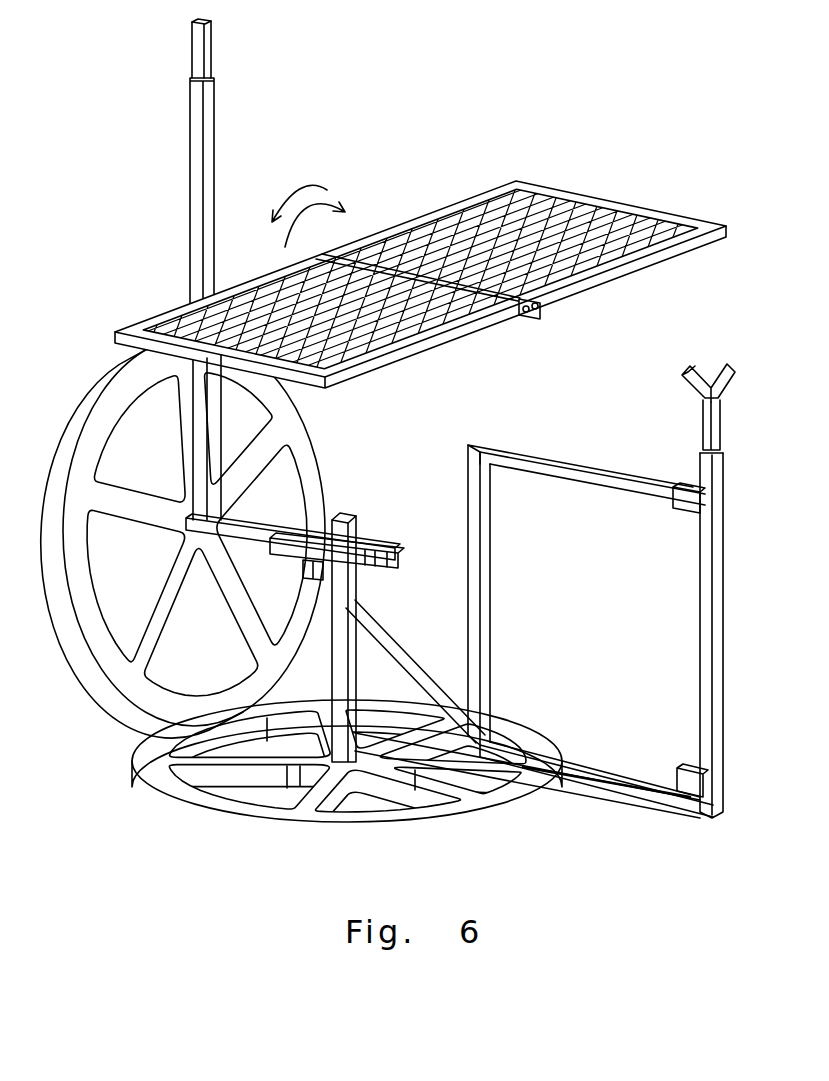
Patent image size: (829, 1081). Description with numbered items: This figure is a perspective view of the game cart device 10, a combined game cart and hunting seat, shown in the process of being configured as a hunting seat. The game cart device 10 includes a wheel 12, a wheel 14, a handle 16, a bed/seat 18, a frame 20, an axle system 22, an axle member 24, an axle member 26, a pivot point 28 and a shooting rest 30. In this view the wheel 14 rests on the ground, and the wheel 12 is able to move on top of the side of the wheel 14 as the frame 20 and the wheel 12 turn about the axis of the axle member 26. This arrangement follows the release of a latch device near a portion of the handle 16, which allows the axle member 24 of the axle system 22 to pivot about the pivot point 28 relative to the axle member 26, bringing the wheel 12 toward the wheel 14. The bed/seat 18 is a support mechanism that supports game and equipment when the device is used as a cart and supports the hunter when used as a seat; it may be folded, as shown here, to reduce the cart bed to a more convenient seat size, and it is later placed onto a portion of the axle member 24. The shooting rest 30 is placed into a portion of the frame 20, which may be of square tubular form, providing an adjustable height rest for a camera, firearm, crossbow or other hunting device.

The game cart device 10 is at (150, 280).
The wheel 12 is at (102, 700).
The wheel 14 is at (252, 828).
The handle 16 is at (488, 595).
The bed/seat 18 is at (611, 200).
The frame 20 is at (610, 790).
The axle system 22 is at (369, 503).
The axle member 24 is at (248, 520).
The axle member 26 is at (340, 681).
The pivot point 28 is at (328, 572).
The shooting rest 30 is at (703, 423).